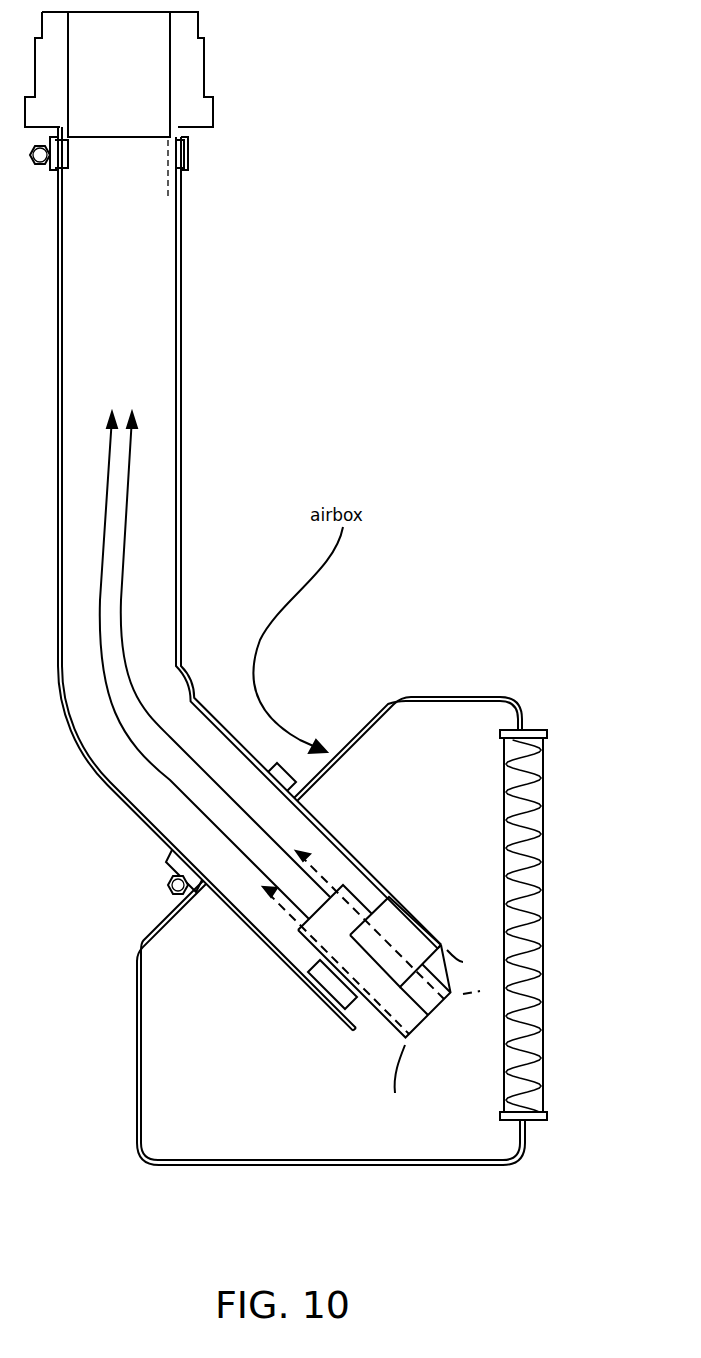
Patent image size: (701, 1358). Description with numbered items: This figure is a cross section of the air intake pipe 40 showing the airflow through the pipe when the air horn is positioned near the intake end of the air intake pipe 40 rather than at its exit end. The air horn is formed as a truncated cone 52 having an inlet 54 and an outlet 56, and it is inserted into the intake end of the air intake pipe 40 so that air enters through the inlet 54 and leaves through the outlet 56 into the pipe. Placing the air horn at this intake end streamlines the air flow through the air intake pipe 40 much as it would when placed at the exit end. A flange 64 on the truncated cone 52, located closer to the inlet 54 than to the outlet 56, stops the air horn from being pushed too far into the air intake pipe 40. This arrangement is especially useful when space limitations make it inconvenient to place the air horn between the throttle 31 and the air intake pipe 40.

The throttle 31 is at (217, 70).
The air intake pipe 40 is at (200, 447).
The truncated cone 52 is at (353, 982).
The inlet 54 is at (432, 1013).
The outlet 56 is at (315, 905).
The flange 64 is at (442, 945).